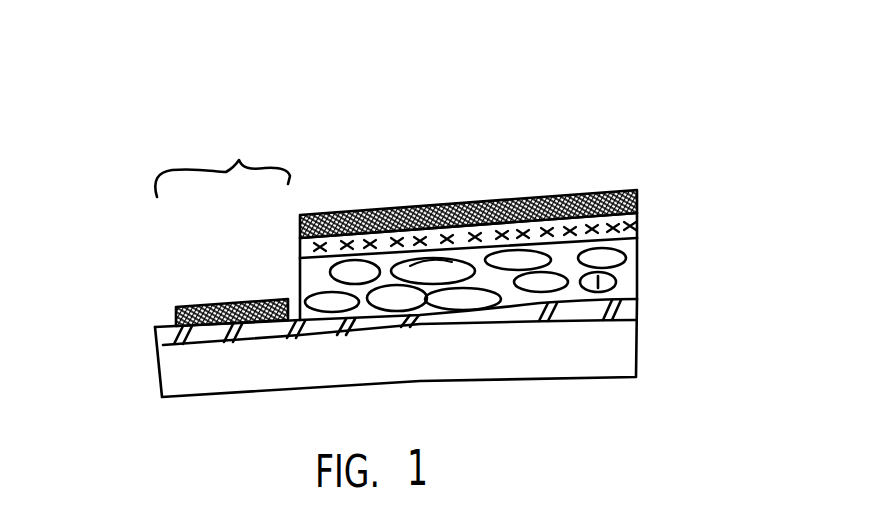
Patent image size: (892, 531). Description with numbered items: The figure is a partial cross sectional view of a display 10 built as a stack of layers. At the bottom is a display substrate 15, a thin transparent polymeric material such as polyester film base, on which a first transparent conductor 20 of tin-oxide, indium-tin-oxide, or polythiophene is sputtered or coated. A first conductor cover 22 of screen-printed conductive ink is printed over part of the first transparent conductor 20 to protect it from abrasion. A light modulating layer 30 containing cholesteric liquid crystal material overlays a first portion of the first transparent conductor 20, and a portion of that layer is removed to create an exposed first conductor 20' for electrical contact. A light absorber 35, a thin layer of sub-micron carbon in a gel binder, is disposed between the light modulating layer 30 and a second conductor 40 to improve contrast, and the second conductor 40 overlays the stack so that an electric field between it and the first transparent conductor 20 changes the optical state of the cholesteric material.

The display 10 is at (185, 88).
The display substrate 15 is at (613, 357).
The first transparent conductor 20 is at (469, 327).
The exposed first conductor 20' is at (222, 141).
The first conductor cover 22 is at (217, 304).
The light modulating layer 30 is at (634, 268).
The light absorber 35 is at (637, 222).
The second conductor 40 is at (637, 193).